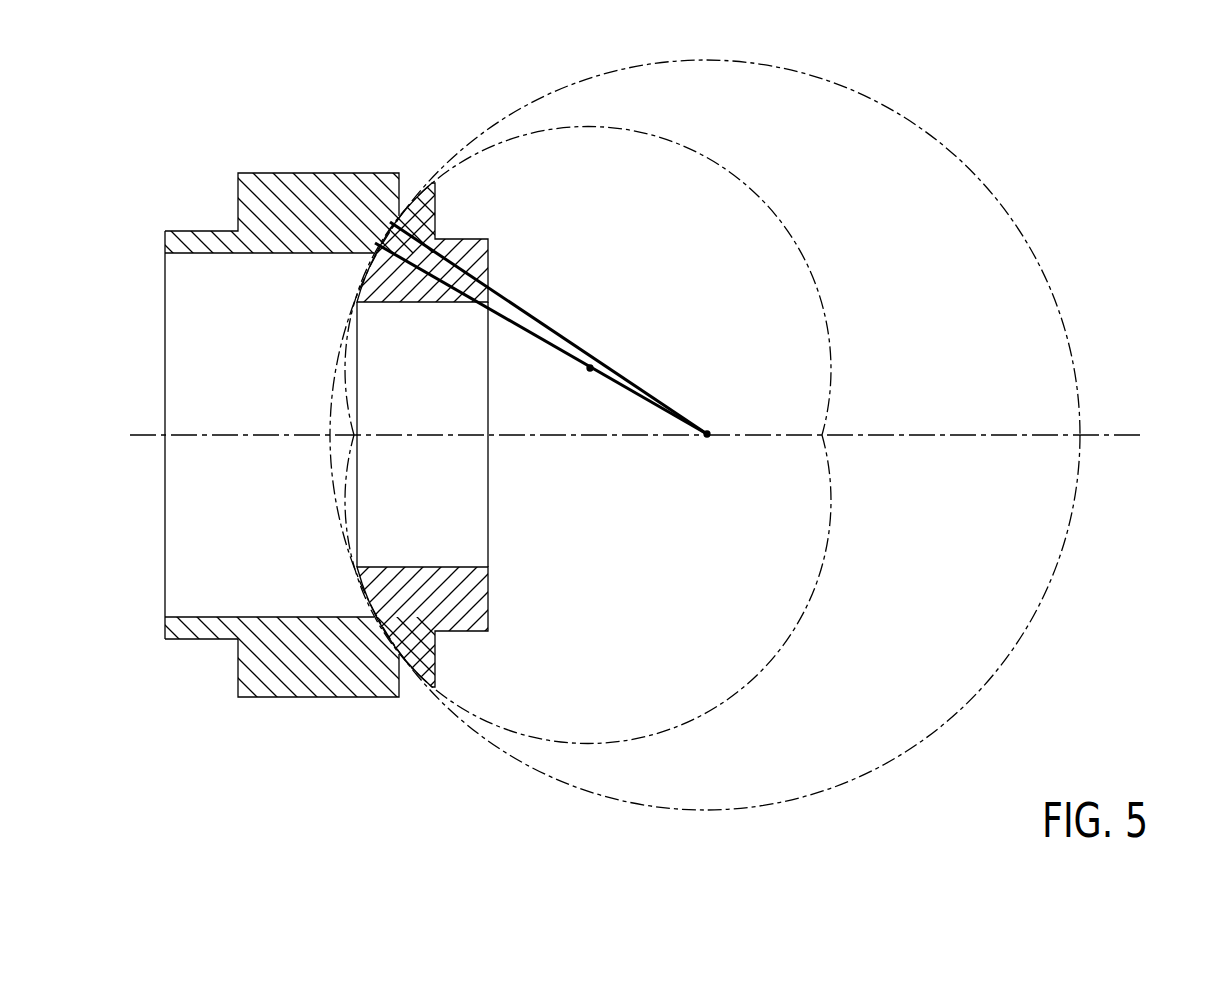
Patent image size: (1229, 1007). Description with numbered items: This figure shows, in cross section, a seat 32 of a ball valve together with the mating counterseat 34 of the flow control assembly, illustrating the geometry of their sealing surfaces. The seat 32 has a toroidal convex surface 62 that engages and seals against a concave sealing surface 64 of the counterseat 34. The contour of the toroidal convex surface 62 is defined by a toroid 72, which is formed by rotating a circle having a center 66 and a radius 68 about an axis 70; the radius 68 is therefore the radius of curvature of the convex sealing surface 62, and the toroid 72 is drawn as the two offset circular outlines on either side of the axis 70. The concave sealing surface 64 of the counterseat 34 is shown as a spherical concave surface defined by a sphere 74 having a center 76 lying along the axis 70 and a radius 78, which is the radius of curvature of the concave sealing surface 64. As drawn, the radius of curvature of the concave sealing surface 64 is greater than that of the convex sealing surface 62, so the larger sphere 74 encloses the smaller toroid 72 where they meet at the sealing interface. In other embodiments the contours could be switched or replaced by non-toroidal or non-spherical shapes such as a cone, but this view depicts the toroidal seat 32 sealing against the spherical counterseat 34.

The seat 32 is at (433, 215).
The counterseat 34 is at (323, 185).
The toroidal convex surface 62 is at (402, 640).
The concave sealing surface 64 is at (380, 641).
The center 66 is at (590, 370).
The radius 68 is at (518, 330).
The axis 70 is at (1102, 435).
The toroid 72 is at (750, 185).
The sphere 74 is at (905, 106).
The center 76 is at (707, 436).
The radius 78 is at (550, 330).